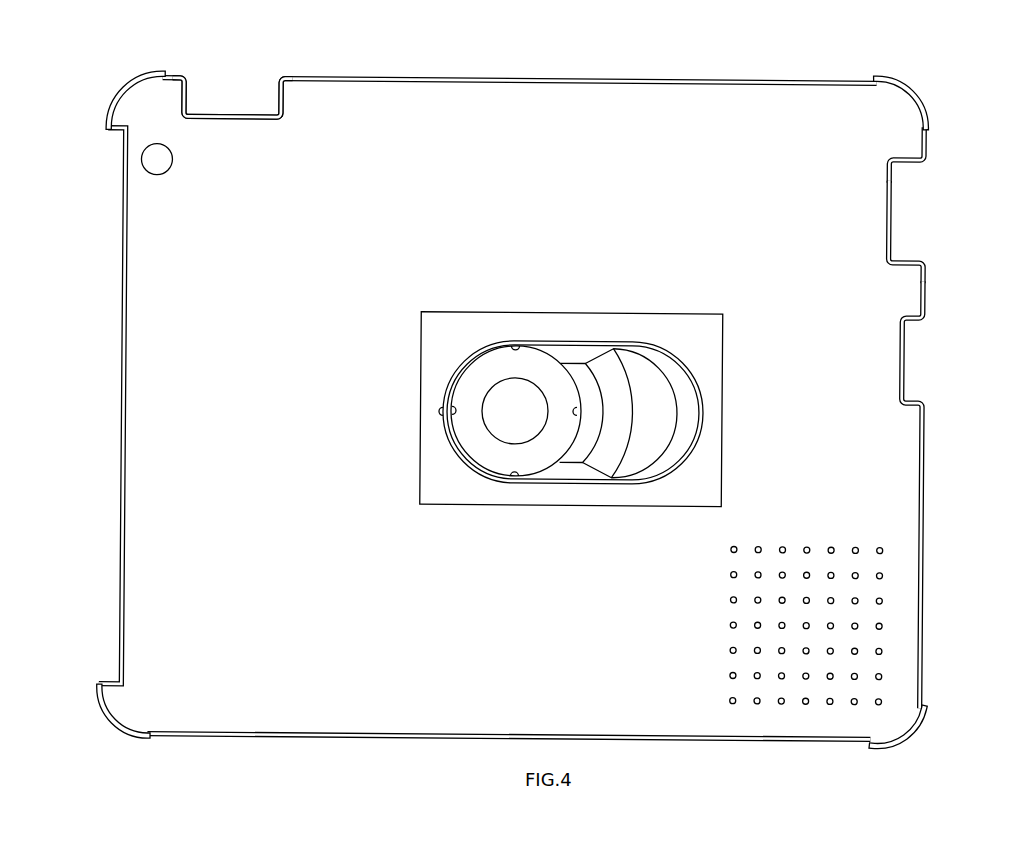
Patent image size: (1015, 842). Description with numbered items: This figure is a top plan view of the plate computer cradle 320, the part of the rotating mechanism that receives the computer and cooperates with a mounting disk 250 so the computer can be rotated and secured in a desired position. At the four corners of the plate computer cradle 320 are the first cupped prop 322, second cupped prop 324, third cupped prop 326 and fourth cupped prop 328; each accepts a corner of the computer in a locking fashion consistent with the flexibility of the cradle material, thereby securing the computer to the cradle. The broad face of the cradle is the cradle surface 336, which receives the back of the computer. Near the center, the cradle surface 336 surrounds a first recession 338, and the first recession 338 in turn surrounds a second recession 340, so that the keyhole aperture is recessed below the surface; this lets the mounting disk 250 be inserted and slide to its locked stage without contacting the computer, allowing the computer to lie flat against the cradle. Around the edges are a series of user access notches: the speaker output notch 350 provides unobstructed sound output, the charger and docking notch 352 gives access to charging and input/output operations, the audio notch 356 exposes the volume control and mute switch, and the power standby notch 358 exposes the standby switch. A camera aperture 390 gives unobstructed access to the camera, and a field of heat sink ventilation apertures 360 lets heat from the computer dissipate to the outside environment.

The mounting disk 250 is at (430, 394).
The plate computer cradle 320 is at (684, 62).
The first cupped prop 322 is at (108, 113).
The second cupped prop 324 is at (920, 105).
The third cupped prop 326 is at (101, 706).
The fourth cupped prop 328 is at (908, 732).
The cradle surface 336 is at (880, 148).
The first recession 338 is at (702, 362).
The second recession 340 is at (567, 355).
The speaker output notch 350 is at (890, 235).
The charger and docking notch 352 is at (900, 392).
The audio notch 356 is at (244, 112).
The power standby notch 358 is at (120, 566).
The heat sink ventilation apertures 360 is at (857, 677).
The camera aperture 390 is at (150, 167).